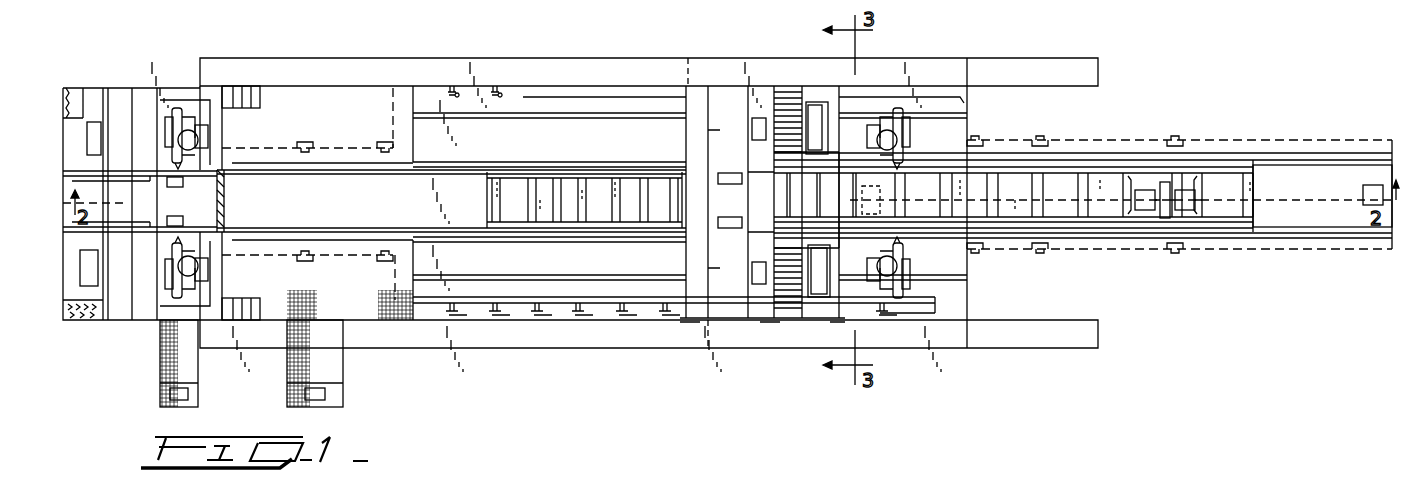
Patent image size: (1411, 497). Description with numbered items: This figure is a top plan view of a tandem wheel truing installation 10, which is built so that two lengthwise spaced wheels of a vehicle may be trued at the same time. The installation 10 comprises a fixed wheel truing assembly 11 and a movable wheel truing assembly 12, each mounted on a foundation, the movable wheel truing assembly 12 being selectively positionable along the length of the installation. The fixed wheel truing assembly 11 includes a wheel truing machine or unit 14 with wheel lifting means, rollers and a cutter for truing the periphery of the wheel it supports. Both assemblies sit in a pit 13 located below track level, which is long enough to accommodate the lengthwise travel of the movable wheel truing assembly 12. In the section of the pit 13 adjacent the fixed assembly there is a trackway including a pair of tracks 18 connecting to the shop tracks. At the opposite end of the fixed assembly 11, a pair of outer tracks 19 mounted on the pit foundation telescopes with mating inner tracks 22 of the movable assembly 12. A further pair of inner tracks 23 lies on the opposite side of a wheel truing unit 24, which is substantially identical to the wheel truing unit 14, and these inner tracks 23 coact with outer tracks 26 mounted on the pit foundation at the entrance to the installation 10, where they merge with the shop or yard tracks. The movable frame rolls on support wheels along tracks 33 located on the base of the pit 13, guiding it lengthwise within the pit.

The tandem wheel truing installation 10 is at (903, 46).
The fixed wheel truing assembly 11 is at (185, 100).
The movable wheel truing assembly 12 is at (757, 105).
The pit 13 is at (958, 294).
The wheel truing machine or unit 14 is at (172, 283).
The pair of tracks 18 is at (122, 172).
The pair of outer tracks 19 is at (348, 172).
The inner tracks 22 is at (572, 175).
The inner tracks 23 is at (1068, 173).
The wheel truing unit 24 is at (722, 278).
The outer tracks 26 is at (1278, 160).
The tracks 33 is at (462, 167).